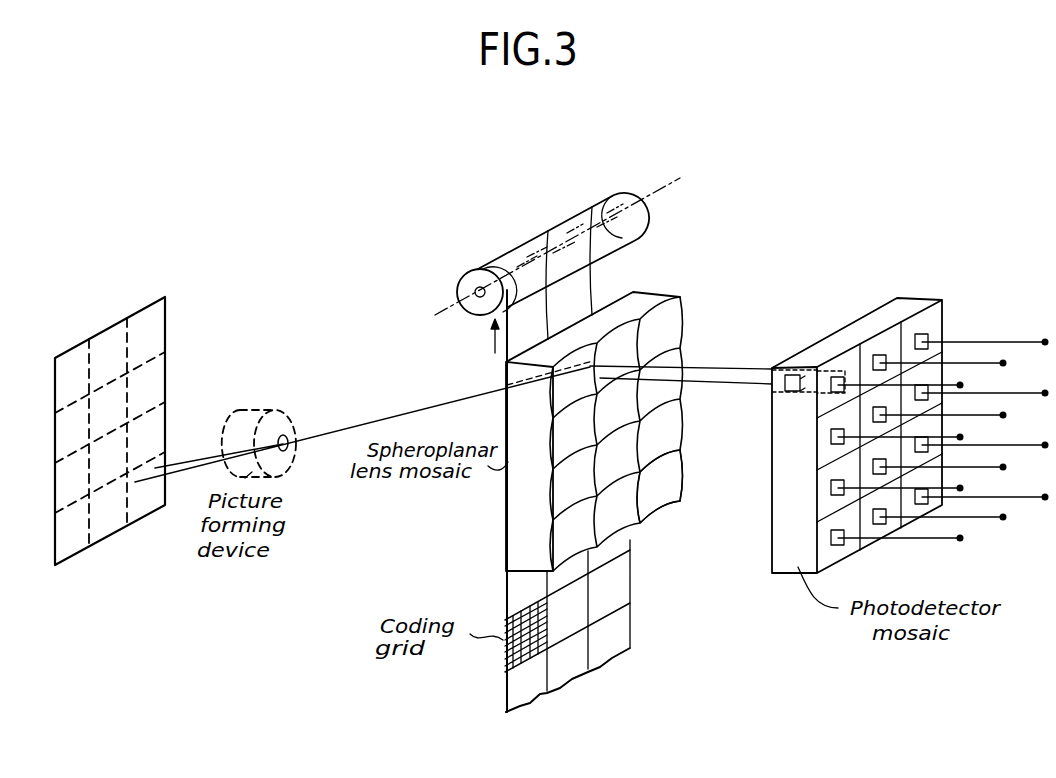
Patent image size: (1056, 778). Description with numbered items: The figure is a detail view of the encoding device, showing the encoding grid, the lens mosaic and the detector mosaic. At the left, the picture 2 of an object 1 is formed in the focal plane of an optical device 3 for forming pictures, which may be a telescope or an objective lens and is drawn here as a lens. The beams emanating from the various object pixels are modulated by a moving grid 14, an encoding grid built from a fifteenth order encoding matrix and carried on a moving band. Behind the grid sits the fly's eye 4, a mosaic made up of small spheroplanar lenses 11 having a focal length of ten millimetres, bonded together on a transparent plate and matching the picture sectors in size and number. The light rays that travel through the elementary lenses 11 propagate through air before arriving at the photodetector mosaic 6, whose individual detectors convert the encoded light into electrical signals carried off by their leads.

The object 1 is at (98, 334).
The picture 2 is at (583, 450).
The optical device for forming pictures 3 is at (268, 410).
The fly's eye 4 is at (618, 431).
The photodetector mosaic 6 is at (772, 566).
The spheroplanar lens 11 is at (657, 505).
The moving grid 14 is at (608, 638).